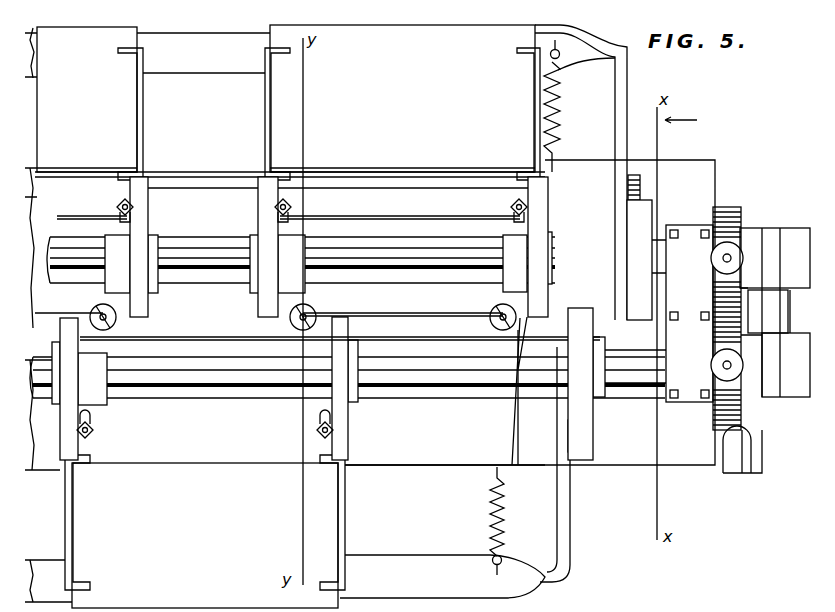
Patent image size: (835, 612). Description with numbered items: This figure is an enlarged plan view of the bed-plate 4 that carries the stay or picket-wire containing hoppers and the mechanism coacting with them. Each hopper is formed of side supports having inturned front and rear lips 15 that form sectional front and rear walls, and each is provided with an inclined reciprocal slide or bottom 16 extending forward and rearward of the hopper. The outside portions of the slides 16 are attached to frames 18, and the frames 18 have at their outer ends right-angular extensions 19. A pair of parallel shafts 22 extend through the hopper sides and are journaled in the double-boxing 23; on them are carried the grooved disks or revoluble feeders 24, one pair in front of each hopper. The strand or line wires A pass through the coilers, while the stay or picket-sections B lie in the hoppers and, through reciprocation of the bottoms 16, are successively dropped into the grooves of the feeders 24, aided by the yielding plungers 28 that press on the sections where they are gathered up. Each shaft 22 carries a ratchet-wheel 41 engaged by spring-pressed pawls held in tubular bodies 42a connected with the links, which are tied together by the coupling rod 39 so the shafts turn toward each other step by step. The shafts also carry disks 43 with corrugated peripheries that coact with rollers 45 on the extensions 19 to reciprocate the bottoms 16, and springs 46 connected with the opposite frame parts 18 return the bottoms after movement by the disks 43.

The inclined reciprocal slide or bottom 16 is at (286, 316).
The frame 18 is at (341, 315).
The inturned front and rear lip 15 is at (338, 558).
The disk or revoluble feeder 24 is at (150, 307).
The shaft 22 is at (425, 352).
The stay or picket-section B is at (86, 222).
The strand or line wire A is at (110, 320).
The yielding plunger 28 is at (134, 208).
The spring 46 is at (544, 122).
The right-angular extension 19 is at (615, 130).
The roller 45 is at (628, 188).
The disk 43 is at (636, 220).
The double-boxing 23 is at (689, 313).
The ratchet-wheel 41 is at (728, 217).
The tubular body 42a is at (702, 384).
The coupling rod 39 is at (766, 320).
The bed-plate 4 is at (445, 391).